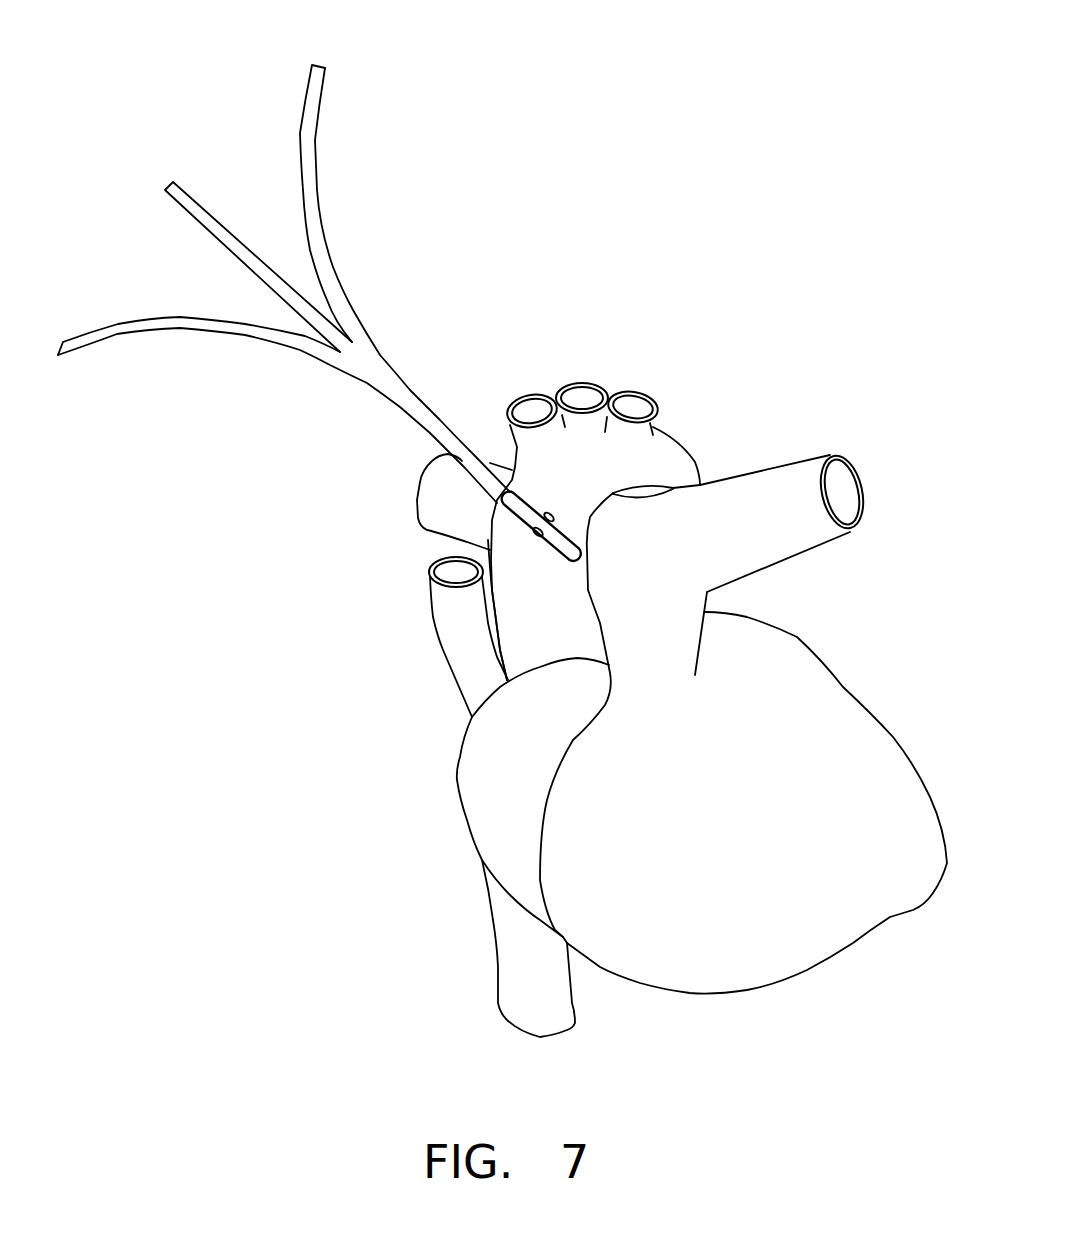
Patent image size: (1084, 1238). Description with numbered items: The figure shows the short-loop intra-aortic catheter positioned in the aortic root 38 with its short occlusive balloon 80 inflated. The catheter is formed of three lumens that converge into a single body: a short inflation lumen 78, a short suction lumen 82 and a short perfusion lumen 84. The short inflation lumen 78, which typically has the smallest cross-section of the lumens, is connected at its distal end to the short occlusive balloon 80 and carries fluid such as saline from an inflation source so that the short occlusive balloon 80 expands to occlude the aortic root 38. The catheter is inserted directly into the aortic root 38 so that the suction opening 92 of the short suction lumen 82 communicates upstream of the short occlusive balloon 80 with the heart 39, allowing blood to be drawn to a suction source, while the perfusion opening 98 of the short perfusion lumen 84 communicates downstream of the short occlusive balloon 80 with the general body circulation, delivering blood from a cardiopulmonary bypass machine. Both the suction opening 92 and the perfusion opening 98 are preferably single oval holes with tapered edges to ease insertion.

The aortic root 38 is at (576, 309).
The heart 39 is at (340, 797).
The short inflation lumen 78 is at (207, 208).
The short occlusive balloon 80 is at (523, 507).
The short suction lumen 82 is at (118, 323).
The short perfusion lumen 84 is at (315, 148).
The suction opening 92 is at (536, 534).
The perfusion opening 98 is at (553, 517).